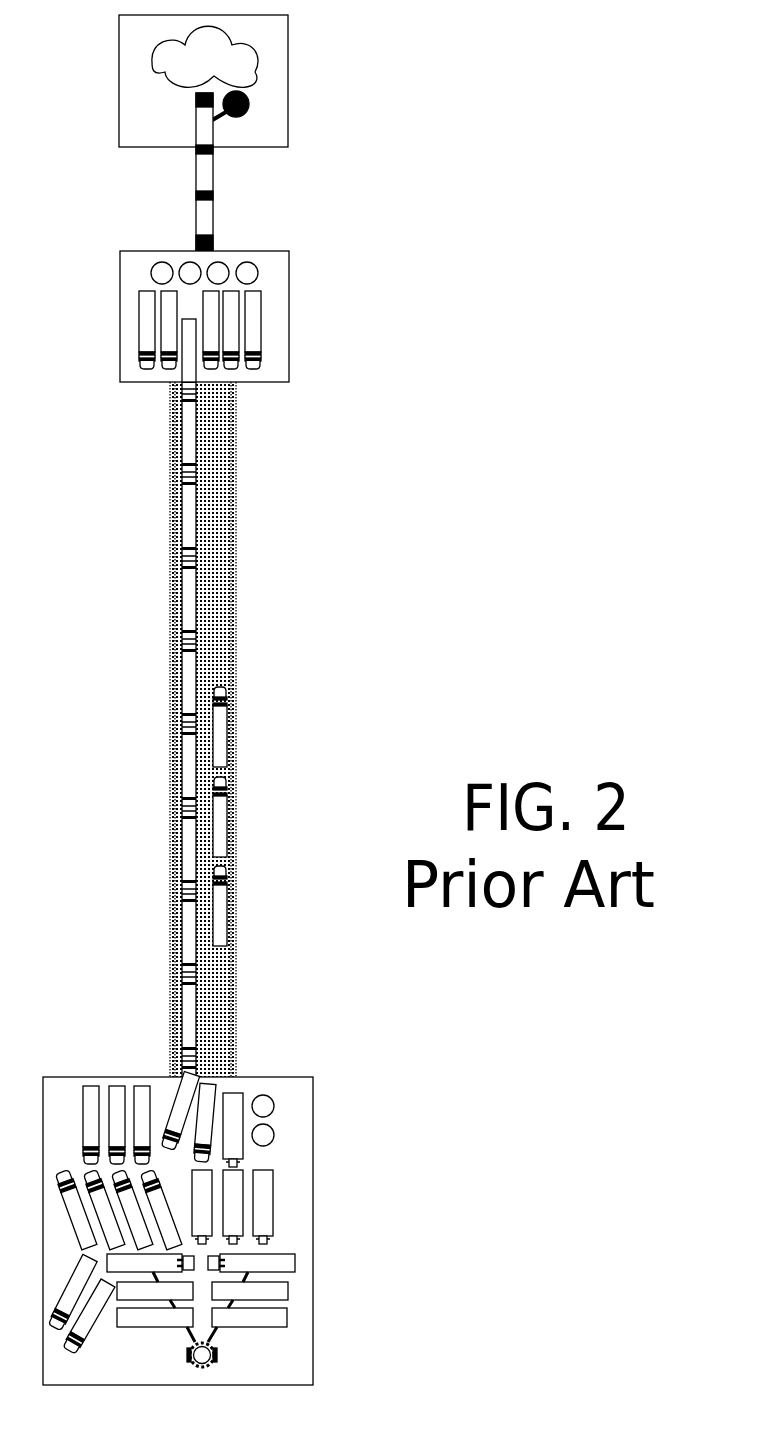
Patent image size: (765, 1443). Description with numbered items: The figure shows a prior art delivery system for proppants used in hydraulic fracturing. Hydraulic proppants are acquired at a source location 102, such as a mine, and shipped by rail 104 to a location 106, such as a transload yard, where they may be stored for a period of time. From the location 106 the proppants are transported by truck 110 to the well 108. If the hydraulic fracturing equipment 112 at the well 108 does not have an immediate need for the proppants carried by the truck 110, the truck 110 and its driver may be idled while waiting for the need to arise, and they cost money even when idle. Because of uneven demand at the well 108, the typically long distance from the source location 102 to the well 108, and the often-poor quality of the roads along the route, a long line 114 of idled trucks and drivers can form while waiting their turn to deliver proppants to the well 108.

The source location 102 is at (289, 100).
The rail 104 is at (213, 210).
The location 106 is at (289, 305).
The well 108 is at (215, 1357).
The truck 110 is at (196, 386).
The hydraulic fracturing equipment 112 is at (322, 1250).
The line of idled trucks 114 is at (152, 400).